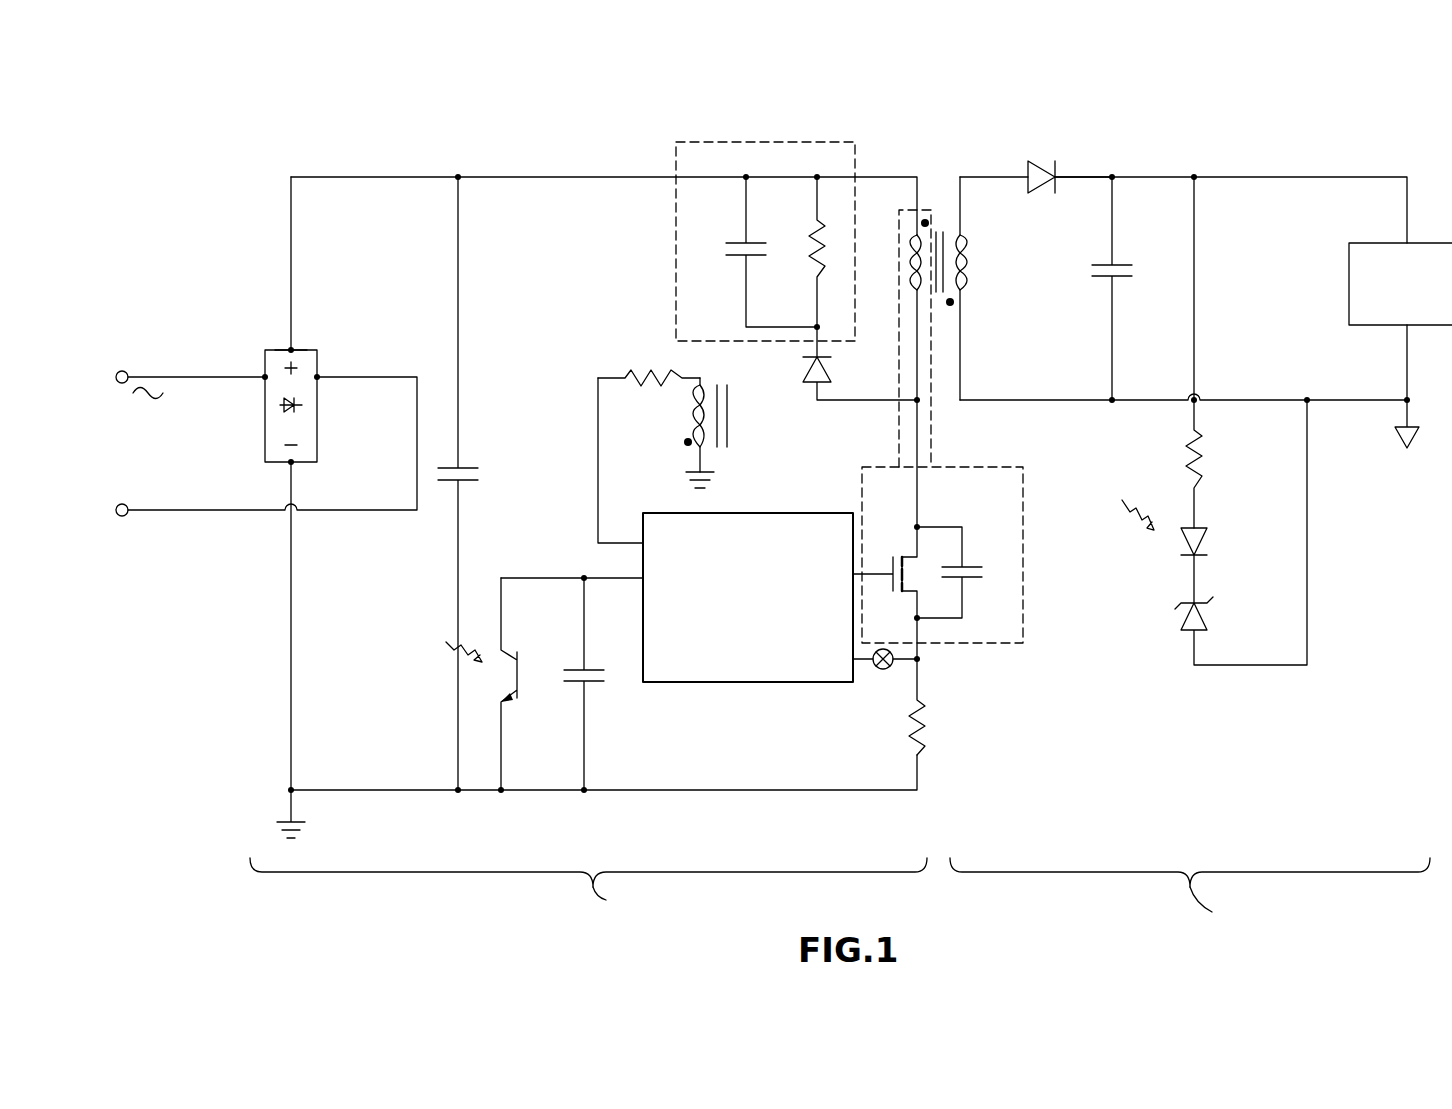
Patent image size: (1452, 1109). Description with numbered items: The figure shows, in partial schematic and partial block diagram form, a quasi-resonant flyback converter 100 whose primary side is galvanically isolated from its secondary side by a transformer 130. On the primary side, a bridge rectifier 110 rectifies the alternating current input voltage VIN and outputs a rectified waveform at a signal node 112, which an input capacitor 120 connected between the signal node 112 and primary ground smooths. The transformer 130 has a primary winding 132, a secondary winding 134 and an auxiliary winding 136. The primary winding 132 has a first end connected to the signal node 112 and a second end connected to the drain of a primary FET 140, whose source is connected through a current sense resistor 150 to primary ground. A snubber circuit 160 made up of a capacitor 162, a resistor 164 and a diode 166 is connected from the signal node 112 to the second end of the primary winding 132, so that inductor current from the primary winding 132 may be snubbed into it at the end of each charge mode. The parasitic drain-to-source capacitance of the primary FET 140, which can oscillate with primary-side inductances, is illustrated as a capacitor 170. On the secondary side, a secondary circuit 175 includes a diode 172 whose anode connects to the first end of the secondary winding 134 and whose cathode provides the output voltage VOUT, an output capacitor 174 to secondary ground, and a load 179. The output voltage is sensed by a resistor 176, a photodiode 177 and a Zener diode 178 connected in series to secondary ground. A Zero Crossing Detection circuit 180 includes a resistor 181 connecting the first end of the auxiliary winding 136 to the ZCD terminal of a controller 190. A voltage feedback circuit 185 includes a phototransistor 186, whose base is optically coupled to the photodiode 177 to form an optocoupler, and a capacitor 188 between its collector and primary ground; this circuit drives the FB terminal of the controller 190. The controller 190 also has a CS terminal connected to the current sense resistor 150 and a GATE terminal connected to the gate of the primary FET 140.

The QR converter 100 is at (200, 107).
The bridge rectifier 110 is at (258, 348).
The signal node 112 is at (292, 348).
The input capacitor 120 is at (472, 458).
The transformer 130 is at (939, 180).
The primary winding 132 is at (912, 254).
The secondary winding 134 is at (966, 266).
The auxiliary winding 136 is at (706, 388).
The primary FET 140 is at (890, 560).
The current sense resistor 150 is at (912, 730).
The snubber circuit 160 is at (745, 142).
The capacitor 162 is at (744, 242).
The resistor 164 is at (815, 276).
The diode 166 is at (815, 386).
The capacitor 170 is at (970, 570).
The diode 172 is at (1052, 160).
The output capacitor 174 is at (1100, 262).
The secondary circuit 175 is at (1040, 136).
The resistor 176 is at (1188, 460).
The photodiode 177 is at (1186, 546).
The Zener diode 178 is at (1180, 612).
The load 179 is at (1349, 258).
The Zero Crossing Detection circuit 180 is at (590, 348).
The resistor 181 is at (634, 372).
The voltage feedback circuit 185 is at (572, 563).
The phototransistor 186 is at (506, 650).
The capacitor 188 is at (591, 686).
The controller 190 is at (748, 597).